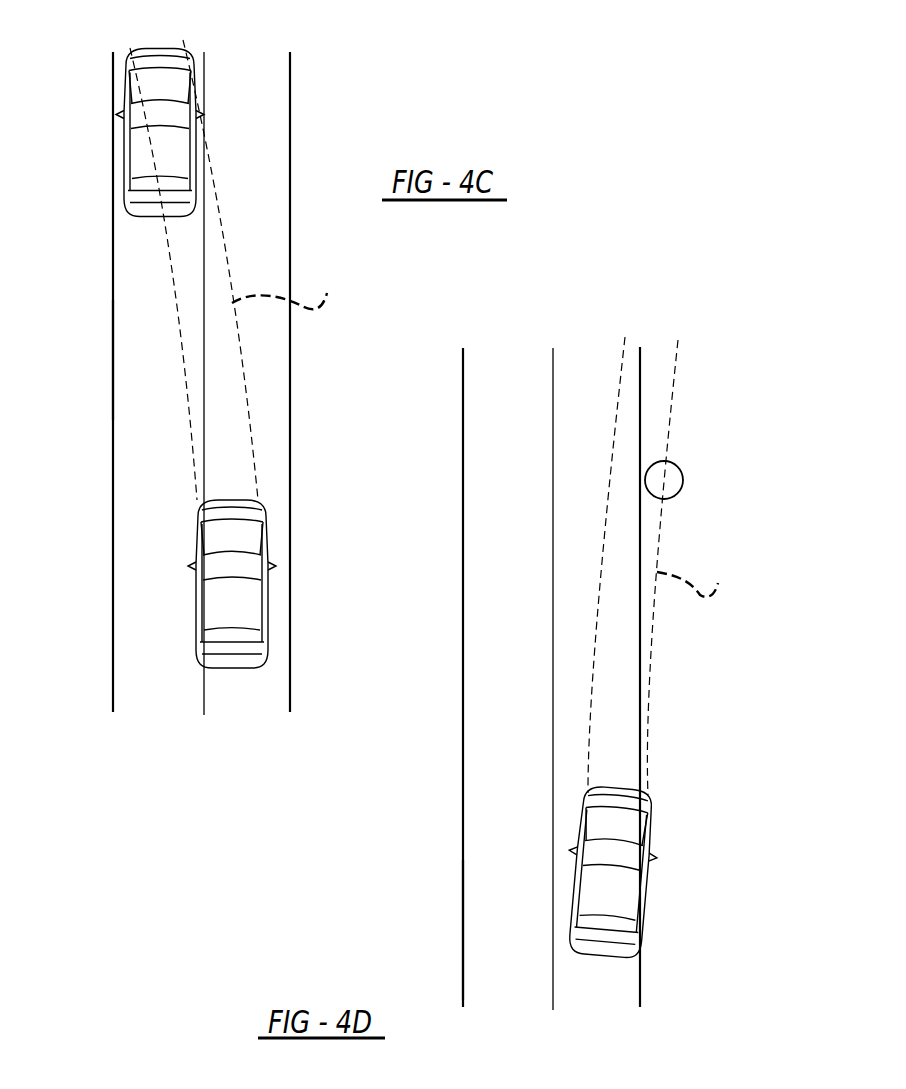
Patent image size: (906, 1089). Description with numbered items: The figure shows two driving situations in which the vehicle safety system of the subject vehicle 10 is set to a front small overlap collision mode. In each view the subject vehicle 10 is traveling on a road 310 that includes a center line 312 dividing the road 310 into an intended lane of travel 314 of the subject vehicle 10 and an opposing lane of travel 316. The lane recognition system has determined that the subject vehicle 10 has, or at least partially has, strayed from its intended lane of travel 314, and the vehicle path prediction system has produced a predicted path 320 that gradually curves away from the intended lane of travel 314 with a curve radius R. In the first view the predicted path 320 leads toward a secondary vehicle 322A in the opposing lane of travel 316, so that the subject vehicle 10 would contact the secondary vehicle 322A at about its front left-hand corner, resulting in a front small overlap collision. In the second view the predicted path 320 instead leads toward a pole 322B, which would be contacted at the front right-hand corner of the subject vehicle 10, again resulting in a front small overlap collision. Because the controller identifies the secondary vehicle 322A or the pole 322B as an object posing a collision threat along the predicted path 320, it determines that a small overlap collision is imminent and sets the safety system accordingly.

In FIG. 4C, the subject vehicle 10 is at (237, 613).
In FIG. 4D, the subject vehicle 10 is at (613, 897).
In FIG. 4C, the road 310 is at (113, 378).
In FIG. 4D, the road 310 is at (463, 927).
In FIG. 4C, the center line 312 is at (203, 698).
In FIG. 4D, the center line 312 is at (553, 982).
In FIG. 4C, the intended lane of travel 314 is at (245, 692).
In FIG. 4D, the intended lane of travel 314 is at (595, 978).
In FIG. 4C, the opposing lane of travel 316 is at (142, 700).
In FIG. 4D, the opposing lane of travel 316 is at (488, 987).
In FIG. 4C, the predicted path of travel 320 is at (220, 213).
In FIG. 4D, the predicted path of travel 320 is at (675, 368).
In FIG. 4C, the secondary vehicle 322A is at (155, 117).
In FIG. 4D, the pole 322B is at (680, 468).
In FIG. 4C, the curve radius R is at (285, 291).
In FIG. 4D, the curve radius R is at (693, 577).